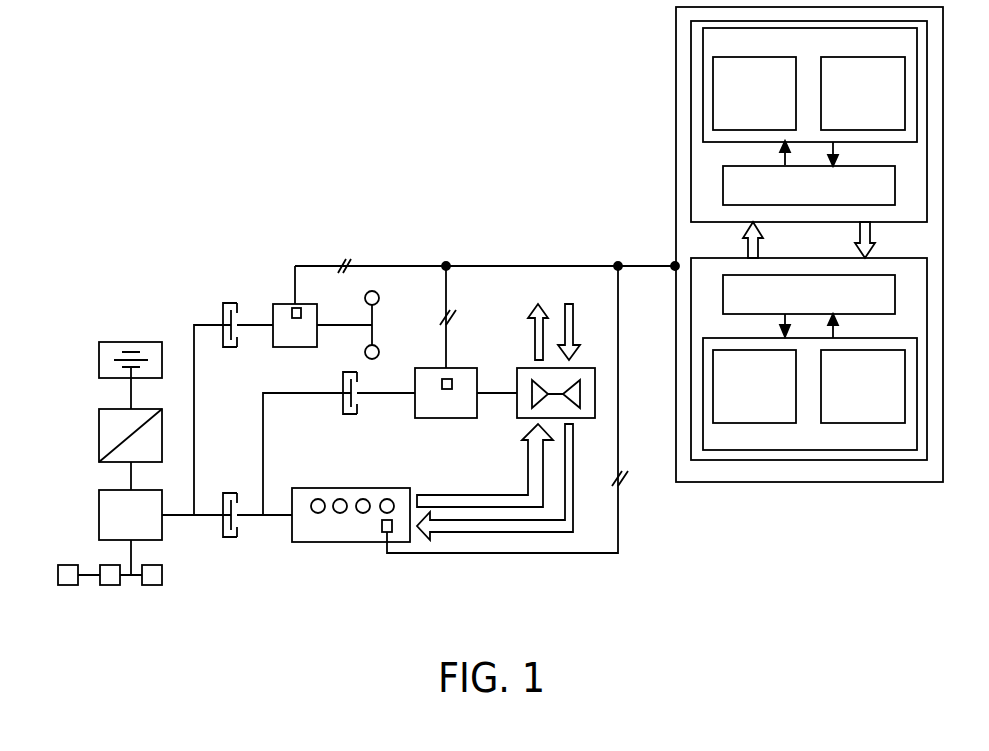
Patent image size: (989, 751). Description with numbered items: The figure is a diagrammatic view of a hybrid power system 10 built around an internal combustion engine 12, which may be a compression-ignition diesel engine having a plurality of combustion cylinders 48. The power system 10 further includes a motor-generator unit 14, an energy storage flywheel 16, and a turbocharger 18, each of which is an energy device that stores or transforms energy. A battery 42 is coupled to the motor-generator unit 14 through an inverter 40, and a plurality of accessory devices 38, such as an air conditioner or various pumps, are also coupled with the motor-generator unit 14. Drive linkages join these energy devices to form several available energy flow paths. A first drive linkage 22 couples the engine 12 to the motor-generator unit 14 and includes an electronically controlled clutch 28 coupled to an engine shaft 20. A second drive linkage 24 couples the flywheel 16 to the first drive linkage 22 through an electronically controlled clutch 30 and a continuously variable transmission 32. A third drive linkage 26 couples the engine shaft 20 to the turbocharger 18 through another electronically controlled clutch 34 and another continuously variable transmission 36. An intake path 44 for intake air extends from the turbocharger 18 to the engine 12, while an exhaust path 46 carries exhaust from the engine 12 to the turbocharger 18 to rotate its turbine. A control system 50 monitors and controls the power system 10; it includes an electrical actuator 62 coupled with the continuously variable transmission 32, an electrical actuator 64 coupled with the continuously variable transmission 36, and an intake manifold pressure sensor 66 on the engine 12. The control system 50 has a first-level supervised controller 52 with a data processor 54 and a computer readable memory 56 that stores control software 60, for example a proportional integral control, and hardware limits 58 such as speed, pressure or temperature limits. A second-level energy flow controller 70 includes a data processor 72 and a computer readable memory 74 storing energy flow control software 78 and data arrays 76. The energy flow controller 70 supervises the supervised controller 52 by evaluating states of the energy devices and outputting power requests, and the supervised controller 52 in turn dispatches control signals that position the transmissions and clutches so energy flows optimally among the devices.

The hybrid power system 10 is at (190, 238).
The internal combustion engine 12 is at (322, 545).
The motor-generator unit 14 is at (98, 500).
The energy storage flywheel 16 is at (380, 297).
The turbocharger 18 is at (589, 366).
The engine shaft 20 is at (278, 518).
The first drive linkage 22 is at (180, 522).
The second drive linkage 24 is at (192, 320).
The third drive linkage 26 is at (292, 402).
The electronically controlled clutch 28 is at (237, 540).
The electronically controlled clutch 30 is at (228, 303).
The continuously variable transmission 32 is at (286, 304).
The electronically controlled clutch 34 is at (342, 378).
The continuously variable transmission 36 is at (426, 367).
The accessory devices 38 is at (75, 593).
The inverter 40 is at (98, 418).
The battery 42 is at (98, 351).
The intake path 44 is at (497, 533).
The exhaust path 46 is at (489, 494).
The combustion cylinders 48 is at (312, 501).
The control system 50 is at (631, 150).
The supervised controller 52 is at (690, 285).
The data processor 54 is at (890, 275).
The computer readable memory 56 is at (702, 363).
The hardware limits 58 is at (882, 350).
The control software 60 is at (738, 350).
The electrical actuator 62 is at (301, 312).
The electrical actuator 64 is at (452, 383).
The intake manifold pressure sensor 66 is at (386, 534).
The energy flow controller 70 is at (690, 118).
The data processor 72 is at (723, 205).
The computer readable memory 74 is at (702, 70).
The data arrays 76 is at (872, 57).
The energy flow control software 78 is at (748, 57).